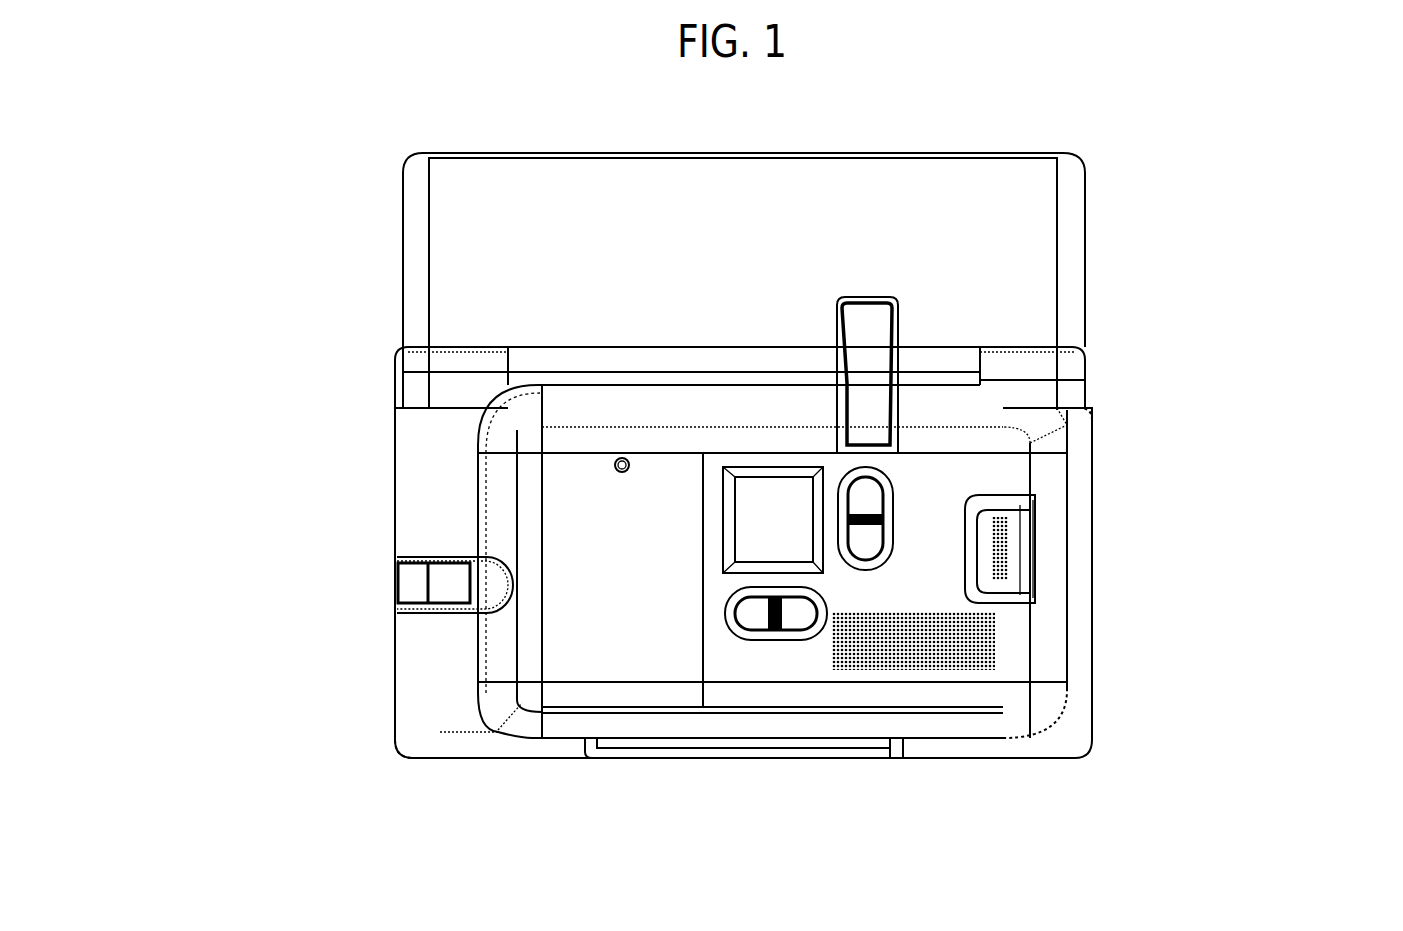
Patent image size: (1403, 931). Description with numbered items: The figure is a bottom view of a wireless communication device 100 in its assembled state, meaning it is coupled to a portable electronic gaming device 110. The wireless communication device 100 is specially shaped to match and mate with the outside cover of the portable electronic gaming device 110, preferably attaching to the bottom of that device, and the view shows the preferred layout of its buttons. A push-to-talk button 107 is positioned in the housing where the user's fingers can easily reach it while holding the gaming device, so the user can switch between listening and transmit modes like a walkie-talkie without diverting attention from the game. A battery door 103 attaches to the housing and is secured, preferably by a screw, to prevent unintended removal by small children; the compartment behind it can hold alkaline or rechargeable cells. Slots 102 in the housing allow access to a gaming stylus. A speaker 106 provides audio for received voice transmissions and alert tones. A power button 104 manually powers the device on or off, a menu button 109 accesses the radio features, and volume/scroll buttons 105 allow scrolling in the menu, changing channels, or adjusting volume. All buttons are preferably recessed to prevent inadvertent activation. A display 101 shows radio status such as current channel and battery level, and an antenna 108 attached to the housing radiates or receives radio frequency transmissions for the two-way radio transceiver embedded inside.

The wireless communication device 100 is at (442, 482).
The display 101 is at (758, 513).
The slots 102 is at (410, 592).
The battery door 103 is at (610, 655).
The power button 104 is at (757, 640).
The volume/scroll buttons 105 is at (858, 540).
The speaker 106 is at (948, 642).
The push-to-talk (PTT) button 107 is at (1020, 552).
The antenna 108 is at (872, 412).
The menu button 109 is at (797, 640).
The portable electronic gaming device 110 is at (455, 352).